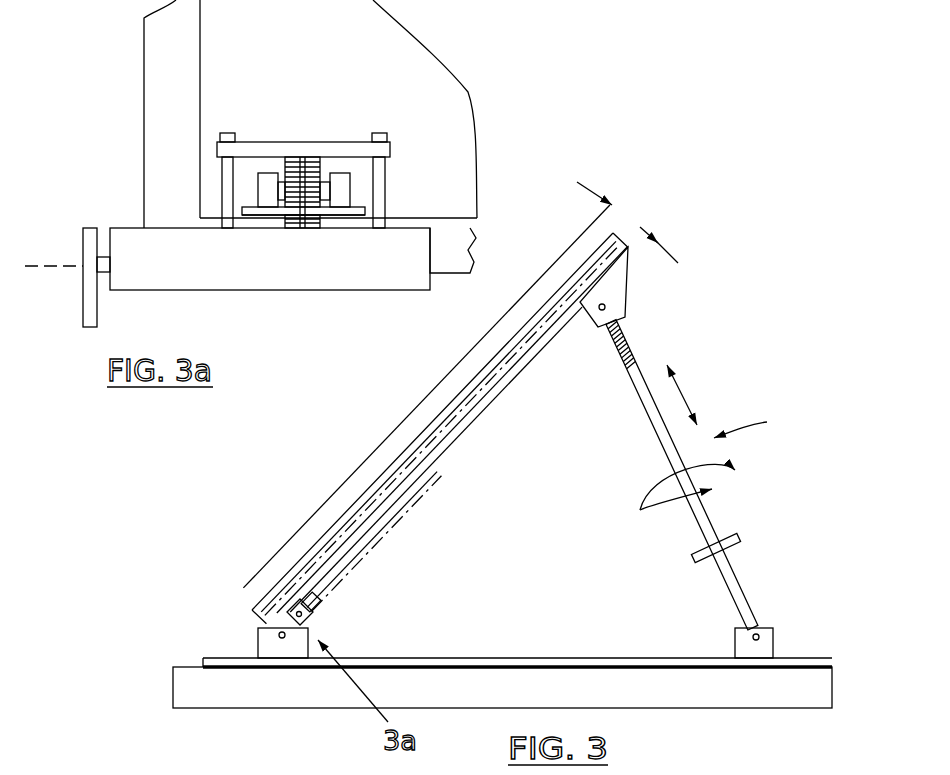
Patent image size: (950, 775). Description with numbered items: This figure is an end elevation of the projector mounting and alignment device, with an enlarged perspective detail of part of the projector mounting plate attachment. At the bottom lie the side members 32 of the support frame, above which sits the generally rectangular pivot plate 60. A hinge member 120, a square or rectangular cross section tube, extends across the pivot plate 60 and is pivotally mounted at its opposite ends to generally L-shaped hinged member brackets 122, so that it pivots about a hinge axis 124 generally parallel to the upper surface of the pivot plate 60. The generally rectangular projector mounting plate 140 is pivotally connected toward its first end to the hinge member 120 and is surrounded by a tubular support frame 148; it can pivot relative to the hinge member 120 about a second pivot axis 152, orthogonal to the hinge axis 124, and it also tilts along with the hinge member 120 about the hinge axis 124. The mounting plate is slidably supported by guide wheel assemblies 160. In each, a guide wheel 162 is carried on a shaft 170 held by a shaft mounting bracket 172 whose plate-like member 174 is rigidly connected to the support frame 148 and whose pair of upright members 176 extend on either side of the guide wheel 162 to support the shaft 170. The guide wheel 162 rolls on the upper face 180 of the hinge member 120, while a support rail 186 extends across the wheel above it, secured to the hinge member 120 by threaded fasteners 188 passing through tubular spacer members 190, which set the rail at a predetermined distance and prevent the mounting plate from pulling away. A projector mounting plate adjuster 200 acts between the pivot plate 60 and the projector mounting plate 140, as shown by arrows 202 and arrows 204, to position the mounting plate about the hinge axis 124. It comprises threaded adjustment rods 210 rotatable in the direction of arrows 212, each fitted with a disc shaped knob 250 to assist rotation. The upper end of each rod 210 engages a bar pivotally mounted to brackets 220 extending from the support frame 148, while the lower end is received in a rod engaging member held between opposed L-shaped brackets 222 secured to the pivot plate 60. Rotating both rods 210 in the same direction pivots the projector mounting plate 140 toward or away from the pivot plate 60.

In FIG. 3, the side members 32 is at (750, 702).
In FIG. 3, the pivot plate 60 is at (537, 659).
In FIG. 3A, the hinge member 120 is at (207, 285).
In FIG. 3A, the hinged member brackets 122 is at (97, 305).
In FIG. 3, the hinged member brackets 122 is at (266, 647).
In FIG. 3A, the hinge axis 124 is at (50, 268).
In FIG. 3A, the projector mounting plate 140 is at (410, 46).
In FIG. 3, the projector mounting plate 140 is at (463, 394).
In FIG. 3A, the tubular support frame 148 is at (156, 79).
In FIG. 3, the second pivot axis 152 is at (421, 495).
In FIG. 3A, the guide wheel assemblies 160 is at (303, 171).
In FIG. 3, the guide wheel assemblies 160 is at (338, 612).
In FIG. 3A, the guide wheel 162 is at (276, 164).
In FIG. 3A, the shaft 170 is at (323, 184).
In FIG. 3A, the shaft mounting bracket 172 is at (280, 215).
In FIG. 3A, the plate-like member 174 is at (340, 213).
In FIG. 3A, the upright members 176 is at (266, 190).
In FIG. 3A, the upper face 180 is at (166, 226).
In FIG. 3A, the support rail 186 is at (290, 148).
In FIG. 3A, the threaded fasteners 188 is at (228, 133).
In FIG. 3A, the tubular spacer members 190 is at (222, 183).
In FIG. 3, the projector mounting plate adjuster 200 is at (761, 422).
In FIG. 3, the arrows 202 is at (688, 400).
In FIG. 3, the arrows 204 is at (668, 255).
In FIG. 3, the threaded adjustment rods 210 is at (738, 594).
In FIG. 3, the arrows 212 is at (641, 509).
In FIG. 3, the brackets 220 is at (612, 295).
In FIG. 3, the L-shaped brackets 222 is at (770, 645).
In FIG. 3, the disc shaped knob 250 is at (735, 544).